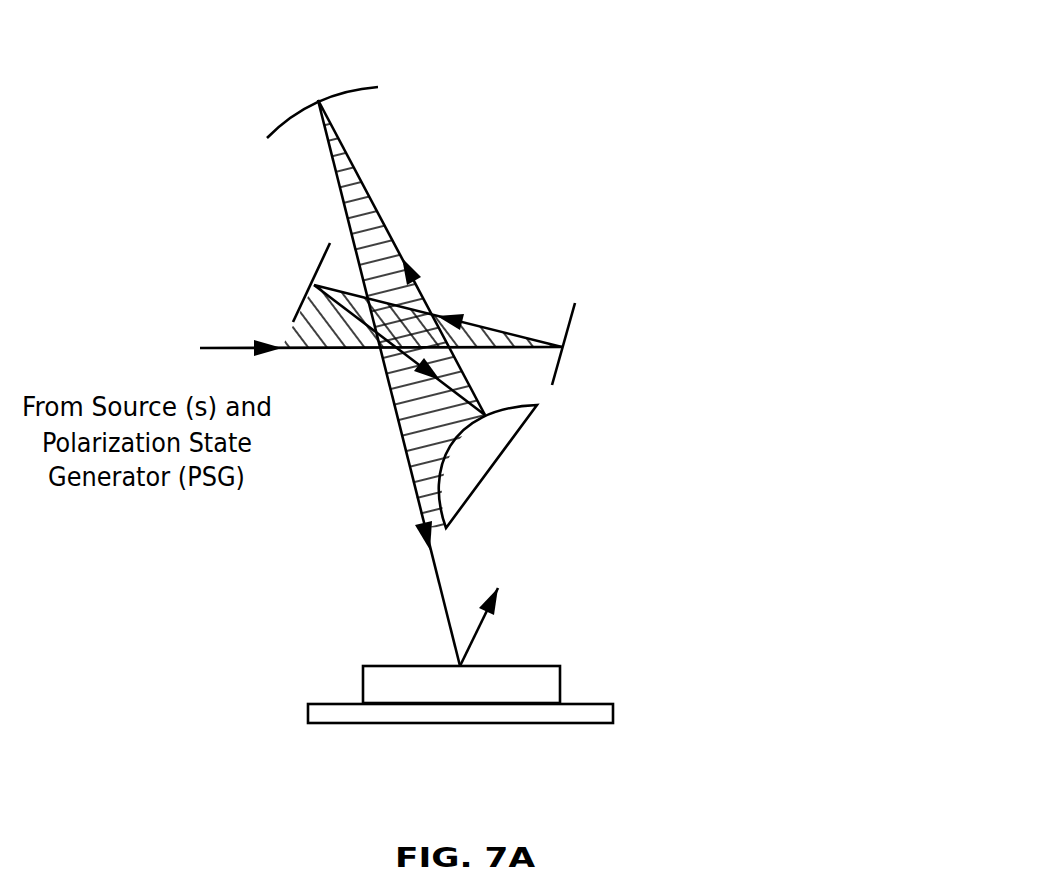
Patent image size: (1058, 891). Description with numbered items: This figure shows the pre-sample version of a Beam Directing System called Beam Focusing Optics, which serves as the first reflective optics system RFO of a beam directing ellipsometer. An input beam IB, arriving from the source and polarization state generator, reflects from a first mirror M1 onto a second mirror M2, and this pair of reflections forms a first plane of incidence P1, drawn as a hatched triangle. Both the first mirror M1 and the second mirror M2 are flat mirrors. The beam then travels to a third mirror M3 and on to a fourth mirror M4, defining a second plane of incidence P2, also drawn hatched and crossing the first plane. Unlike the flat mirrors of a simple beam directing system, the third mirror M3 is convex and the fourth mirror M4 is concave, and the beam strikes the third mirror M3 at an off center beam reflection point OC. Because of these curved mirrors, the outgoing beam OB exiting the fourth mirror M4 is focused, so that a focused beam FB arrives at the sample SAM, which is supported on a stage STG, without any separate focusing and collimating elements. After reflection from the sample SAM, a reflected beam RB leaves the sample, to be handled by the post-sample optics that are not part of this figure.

The first reflective optics system RFO is at (797, 178).
The first mirror M1 is at (577, 359).
The second mirror M2 is at (303, 273).
The third mirror M3 is at (512, 483).
The fourth mirror M4 is at (312, 87).
The first plane of incidence P1 is at (470, 318).
The second plane of incidence P2 is at (378, 215).
The input beam IB is at (227, 340).
The outgoing beam OB is at (425, 568).
The reflected beam RB is at (609, 618).
The focused beam FB is at (447, 655).
The sample SAM is at (483, 699).
The stage STG is at (620, 693).
The off center beam reflection point on M3 OC is at (494, 406).